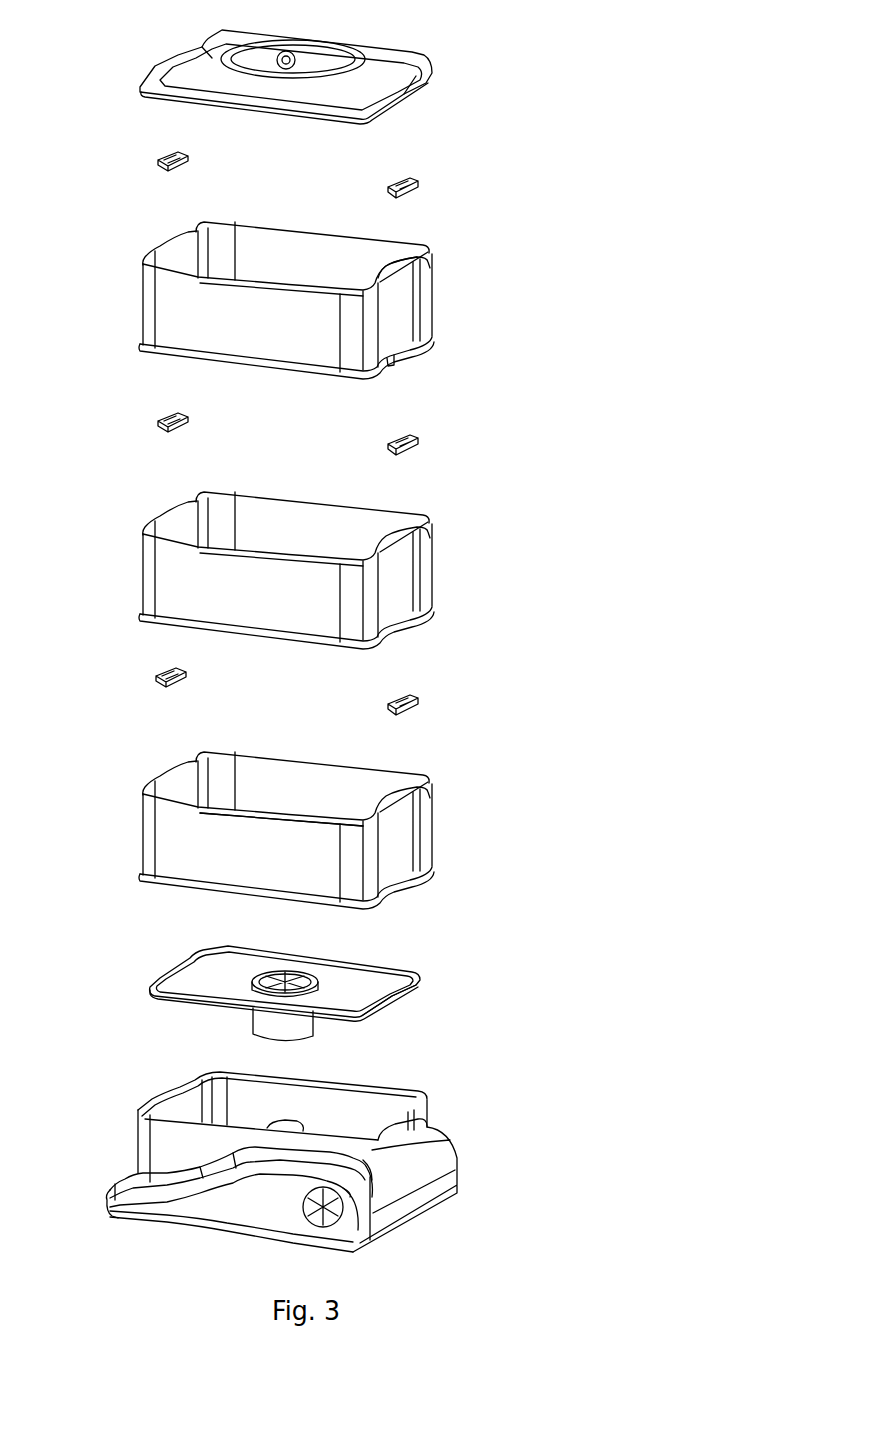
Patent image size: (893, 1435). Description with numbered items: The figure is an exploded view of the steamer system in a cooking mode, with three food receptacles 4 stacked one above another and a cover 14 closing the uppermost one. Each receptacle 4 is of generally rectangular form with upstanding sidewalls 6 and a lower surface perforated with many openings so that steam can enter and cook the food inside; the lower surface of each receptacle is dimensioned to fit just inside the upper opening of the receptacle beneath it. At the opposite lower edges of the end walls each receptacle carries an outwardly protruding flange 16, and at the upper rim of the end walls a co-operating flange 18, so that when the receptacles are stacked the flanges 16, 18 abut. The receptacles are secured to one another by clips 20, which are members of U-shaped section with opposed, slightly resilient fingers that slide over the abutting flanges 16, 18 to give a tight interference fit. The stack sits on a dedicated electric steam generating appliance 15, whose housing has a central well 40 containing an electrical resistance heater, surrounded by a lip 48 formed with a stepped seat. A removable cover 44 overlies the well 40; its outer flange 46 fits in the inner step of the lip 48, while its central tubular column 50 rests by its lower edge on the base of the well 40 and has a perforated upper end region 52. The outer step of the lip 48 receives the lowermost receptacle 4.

The food receptacle 4 is at (323, 584).
The sidewall 6 is at (257, 867).
The cover 14 is at (408, 55).
The electric appliance 15 is at (275, 1150).
The outwardly protruding flange 16 is at (393, 362).
The co-operating flange 18 is at (405, 267).
The clip 20 is at (417, 182).
The central well 40 is at (337, 1117).
The removable cover 44 is at (313, 988).
The outer flange 46 is at (420, 975).
The lip 48 is at (420, 1093).
The central tubular column 50 is at (310, 1027).
The upper end region 52 is at (285, 972).